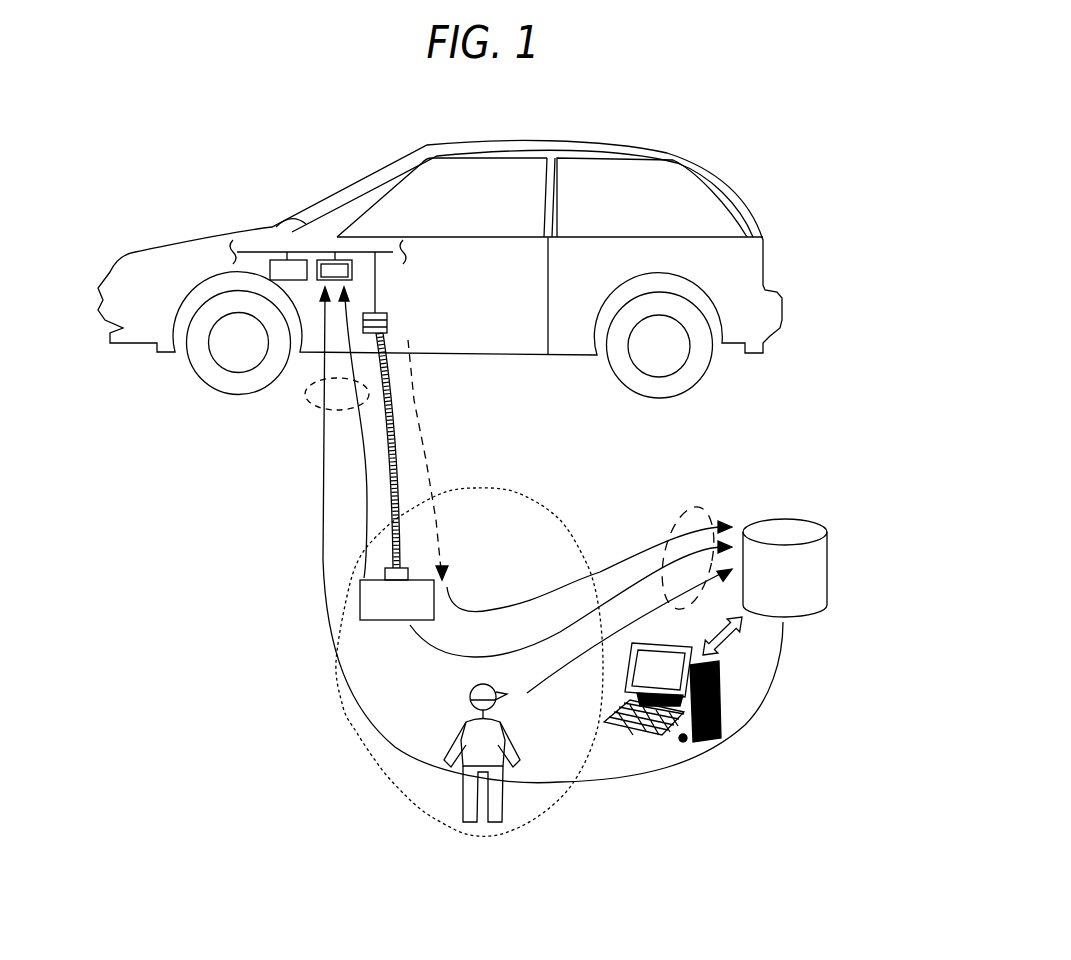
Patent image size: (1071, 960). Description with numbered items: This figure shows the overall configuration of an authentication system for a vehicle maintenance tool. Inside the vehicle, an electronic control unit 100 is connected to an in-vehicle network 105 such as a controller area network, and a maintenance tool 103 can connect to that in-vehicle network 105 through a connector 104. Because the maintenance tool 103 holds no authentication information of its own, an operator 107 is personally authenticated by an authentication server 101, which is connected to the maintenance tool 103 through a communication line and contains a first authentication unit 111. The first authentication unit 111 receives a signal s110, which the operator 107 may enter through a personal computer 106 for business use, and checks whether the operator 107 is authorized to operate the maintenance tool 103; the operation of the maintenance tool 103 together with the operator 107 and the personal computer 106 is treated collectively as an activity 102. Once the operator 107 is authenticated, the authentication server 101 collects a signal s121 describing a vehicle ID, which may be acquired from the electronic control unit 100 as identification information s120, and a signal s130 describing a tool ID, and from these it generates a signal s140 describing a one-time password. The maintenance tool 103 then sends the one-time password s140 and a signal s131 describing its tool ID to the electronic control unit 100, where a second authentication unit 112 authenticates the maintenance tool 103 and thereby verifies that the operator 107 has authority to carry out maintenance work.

The electronic control unit 100 is at (330, 258).
The authentication server 101 is at (787, 530).
The activity 102 is at (357, 737).
The maintenance tool 103 is at (360, 600).
The connector 104 is at (390, 323).
The in-vehicle network 105 is at (400, 237).
The personal computer for business use 106 is at (720, 697).
The operator 107 is at (467, 747).
The first authentication unit 111 is at (683, 517).
The second authentication unit 112 is at (306, 400).
The signal s110 is at (622, 597).
The vehicle ID s120 is at (421, 425).
The signal describing a vehicle ID s121 is at (507, 562).
The signal describing a tool ID s130 is at (577, 588).
The signal describing a tool ID s131 is at (362, 440).
The signal describing a one-time password s140 is at (670, 817).